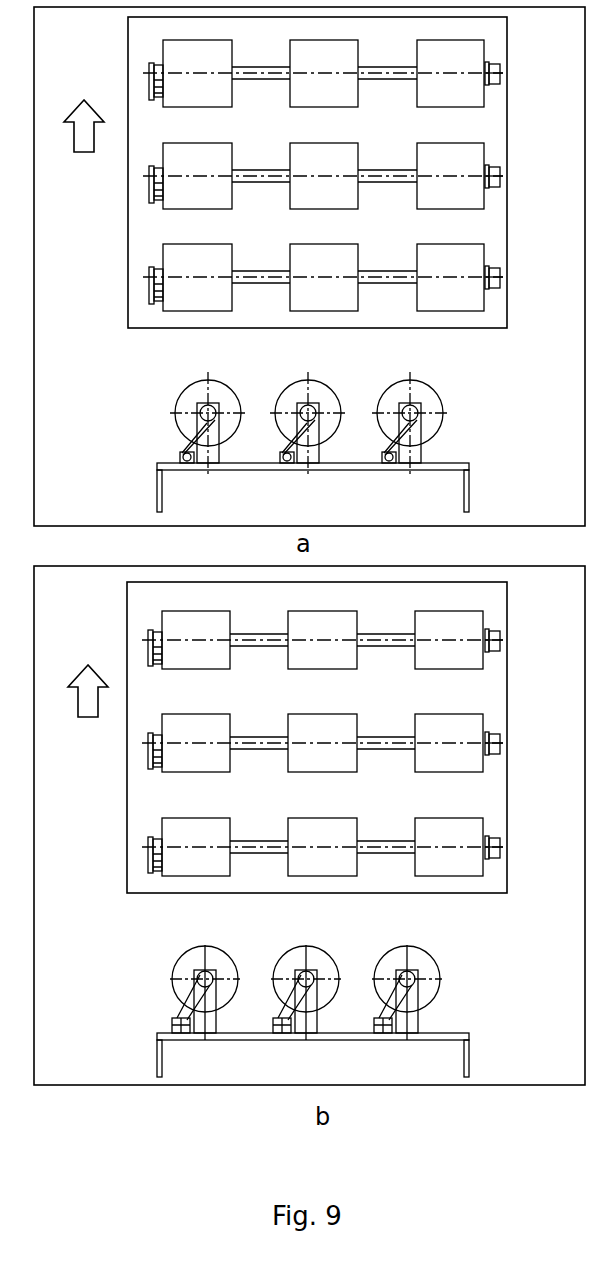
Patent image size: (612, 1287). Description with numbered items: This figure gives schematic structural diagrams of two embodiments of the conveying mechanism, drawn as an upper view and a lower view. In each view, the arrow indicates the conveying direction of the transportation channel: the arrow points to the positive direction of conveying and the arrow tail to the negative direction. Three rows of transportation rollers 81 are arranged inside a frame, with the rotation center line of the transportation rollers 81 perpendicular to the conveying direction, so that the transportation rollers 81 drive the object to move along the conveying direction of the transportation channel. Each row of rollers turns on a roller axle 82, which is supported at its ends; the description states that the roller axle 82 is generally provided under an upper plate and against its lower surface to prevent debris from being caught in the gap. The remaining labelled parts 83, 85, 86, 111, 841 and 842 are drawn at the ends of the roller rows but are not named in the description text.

The transportation roller 81 is at (478, 253).
The roller axle 82 is at (537, 58).
The second roller support 83 is at (150, 176).
The third roller support 85 is at (150, 271).
The first roller support 86 is at (151, 85).
The frame mounting bearing 111 is at (542, 162).
The second bearing block 841 is at (154, 203).
The first bearing block 842 is at (157, 99).